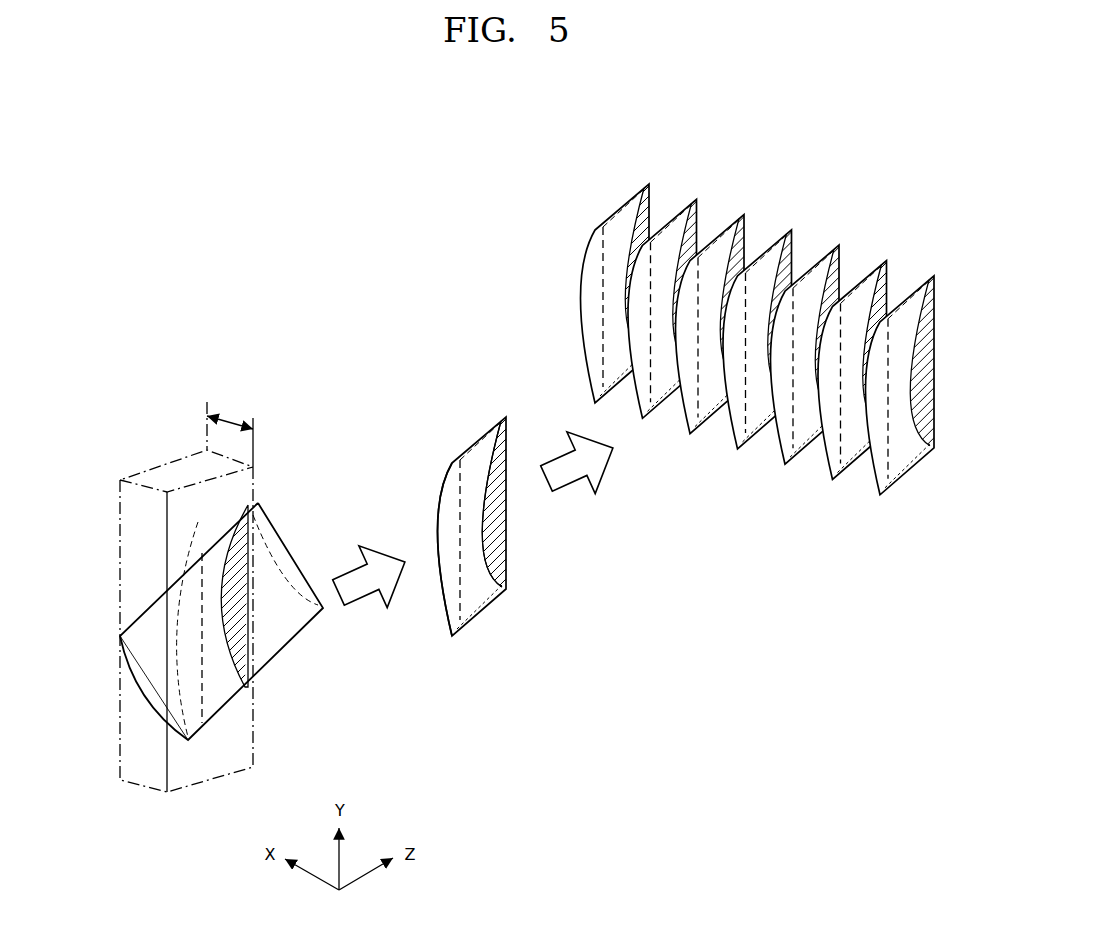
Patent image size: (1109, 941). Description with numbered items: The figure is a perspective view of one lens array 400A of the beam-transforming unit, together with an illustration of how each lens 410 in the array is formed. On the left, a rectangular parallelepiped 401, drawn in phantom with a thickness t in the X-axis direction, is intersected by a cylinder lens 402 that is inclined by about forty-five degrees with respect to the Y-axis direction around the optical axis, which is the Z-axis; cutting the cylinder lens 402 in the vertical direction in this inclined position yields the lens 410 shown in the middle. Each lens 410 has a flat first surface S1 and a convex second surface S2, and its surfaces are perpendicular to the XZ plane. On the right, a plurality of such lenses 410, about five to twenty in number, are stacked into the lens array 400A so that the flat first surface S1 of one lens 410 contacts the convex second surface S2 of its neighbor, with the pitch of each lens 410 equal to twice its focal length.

The rectangular parallelepiped 401 is at (173, 473).
The cylinder lens 402 is at (145, 688).
The lens 410 is at (632, 504).
The lens array 400A is at (828, 210).
The flat first surface S1 is at (498, 525).
The convex second surface S2 is at (437, 520).